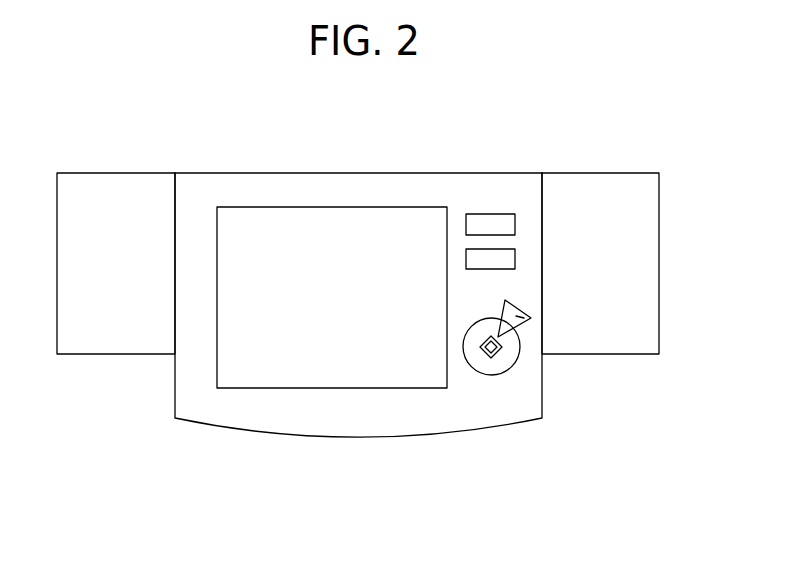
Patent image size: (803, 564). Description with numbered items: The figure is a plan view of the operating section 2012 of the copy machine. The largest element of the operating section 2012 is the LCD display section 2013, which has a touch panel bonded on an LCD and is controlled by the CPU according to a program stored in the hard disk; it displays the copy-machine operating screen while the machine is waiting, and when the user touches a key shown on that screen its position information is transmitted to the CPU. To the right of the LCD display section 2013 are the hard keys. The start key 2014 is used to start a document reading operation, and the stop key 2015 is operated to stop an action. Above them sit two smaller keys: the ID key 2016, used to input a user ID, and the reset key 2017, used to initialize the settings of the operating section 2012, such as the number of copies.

The operating section 2012 is at (313, 173).
The LCD display section 2013 is at (290, 355).
The start key 2014 is at (492, 377).
The stop key 2015 is at (535, 322).
The ID key 2016 is at (500, 257).
The reset key 2017 is at (488, 224).